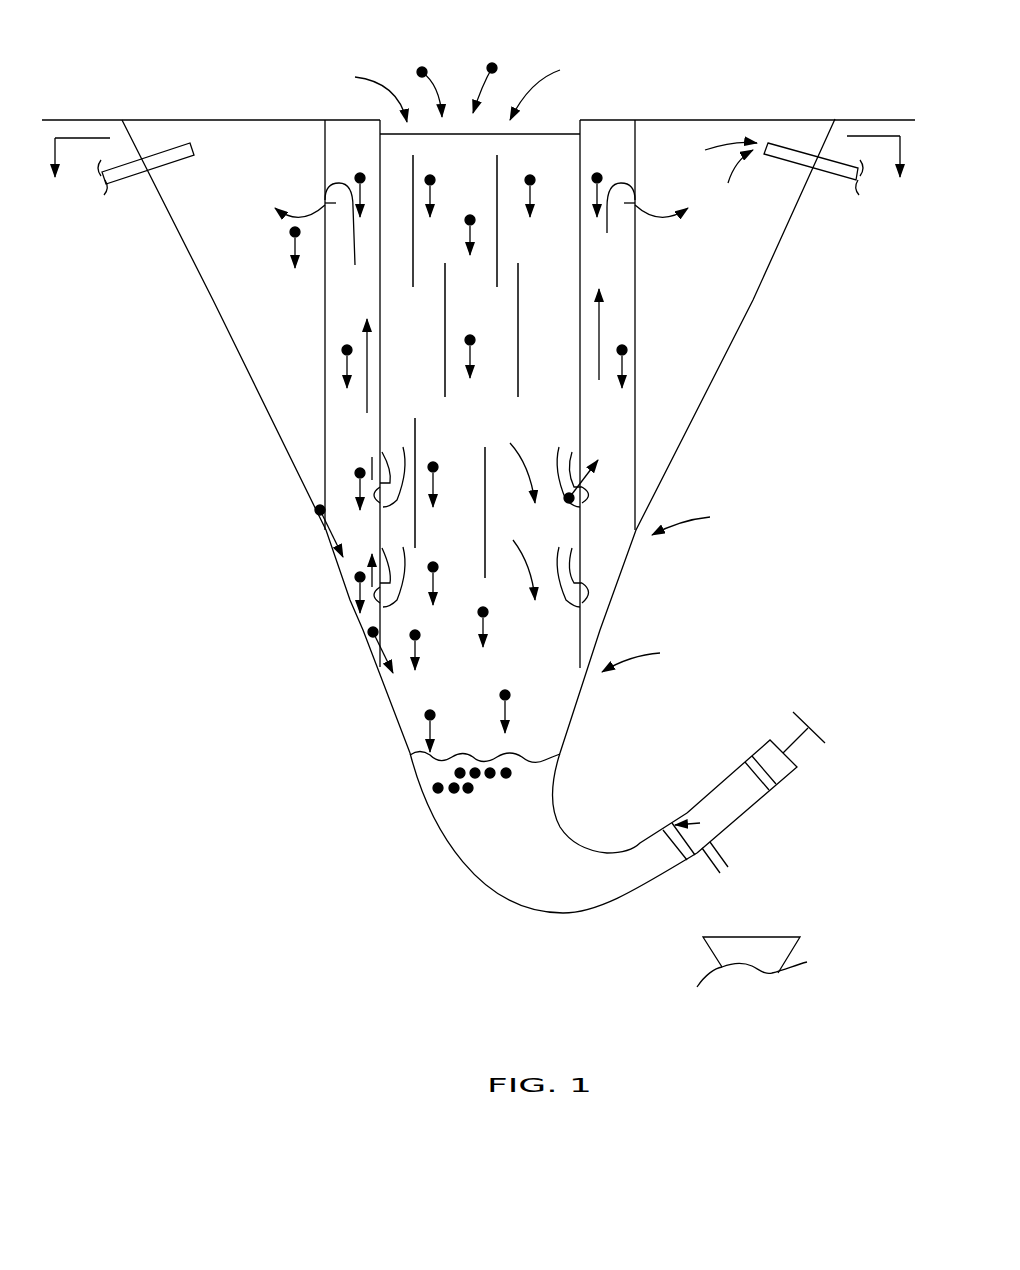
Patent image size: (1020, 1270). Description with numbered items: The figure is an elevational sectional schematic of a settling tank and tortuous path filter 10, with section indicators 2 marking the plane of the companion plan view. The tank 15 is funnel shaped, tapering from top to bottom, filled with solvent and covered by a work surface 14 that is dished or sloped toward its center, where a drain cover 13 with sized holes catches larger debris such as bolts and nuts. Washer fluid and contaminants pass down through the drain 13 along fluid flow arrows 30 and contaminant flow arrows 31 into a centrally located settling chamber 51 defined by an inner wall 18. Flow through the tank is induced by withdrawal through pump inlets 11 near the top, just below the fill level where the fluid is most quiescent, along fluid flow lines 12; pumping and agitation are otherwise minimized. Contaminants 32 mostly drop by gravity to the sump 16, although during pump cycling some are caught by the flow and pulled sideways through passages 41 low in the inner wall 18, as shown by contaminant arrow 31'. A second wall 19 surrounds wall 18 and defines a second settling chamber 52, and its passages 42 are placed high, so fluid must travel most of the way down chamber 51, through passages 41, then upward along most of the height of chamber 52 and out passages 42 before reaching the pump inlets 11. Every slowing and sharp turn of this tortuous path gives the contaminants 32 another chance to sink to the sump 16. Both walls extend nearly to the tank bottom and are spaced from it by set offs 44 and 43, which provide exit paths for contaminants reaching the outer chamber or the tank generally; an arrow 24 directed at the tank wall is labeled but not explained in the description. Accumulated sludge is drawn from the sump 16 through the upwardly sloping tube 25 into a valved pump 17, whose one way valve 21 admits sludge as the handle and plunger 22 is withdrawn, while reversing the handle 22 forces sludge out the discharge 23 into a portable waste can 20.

The section line 2- 2 is at (473, 176).
The settling tank and tortuous path filter 10 is at (323, 589).
The pump inlet 11 is at (118, 187).
The fluid flow lines 12 is at (728, 176).
The drain cover 13 is at (540, 133).
The work surface 14 is at (700, 119).
The tank 15 is at (737, 322).
The sump 16 is at (552, 782).
The valved pump 17 is at (738, 820).
The inner wall 18 is at (582, 427).
The second wall 19 is at (636, 400).
The portable waste can 20 is at (780, 947).
The one way valve 21 is at (693, 820).
The handle and plunger 22 is at (788, 733).
The discharge 23 is at (725, 862).
The side wall region 24 is at (742, 250).
The upwardly sloping tube 25 is at (573, 917).
The fluid flow arrows 30 is at (413, 590).
The contaminant flow arrows 31 is at (458, 387).
The contaminant arrow 31' is at (599, 479).
The contaminants 32 is at (470, 788).
The passages in the inner wall 41 is at (586, 500).
The passages in the second wall 42 is at (320, 200).
The set off 43 is at (694, 517).
The set off 44 is at (644, 654).
The settling chamber 51 is at (424, 378).
The second settling chamber 52 is at (374, 448).